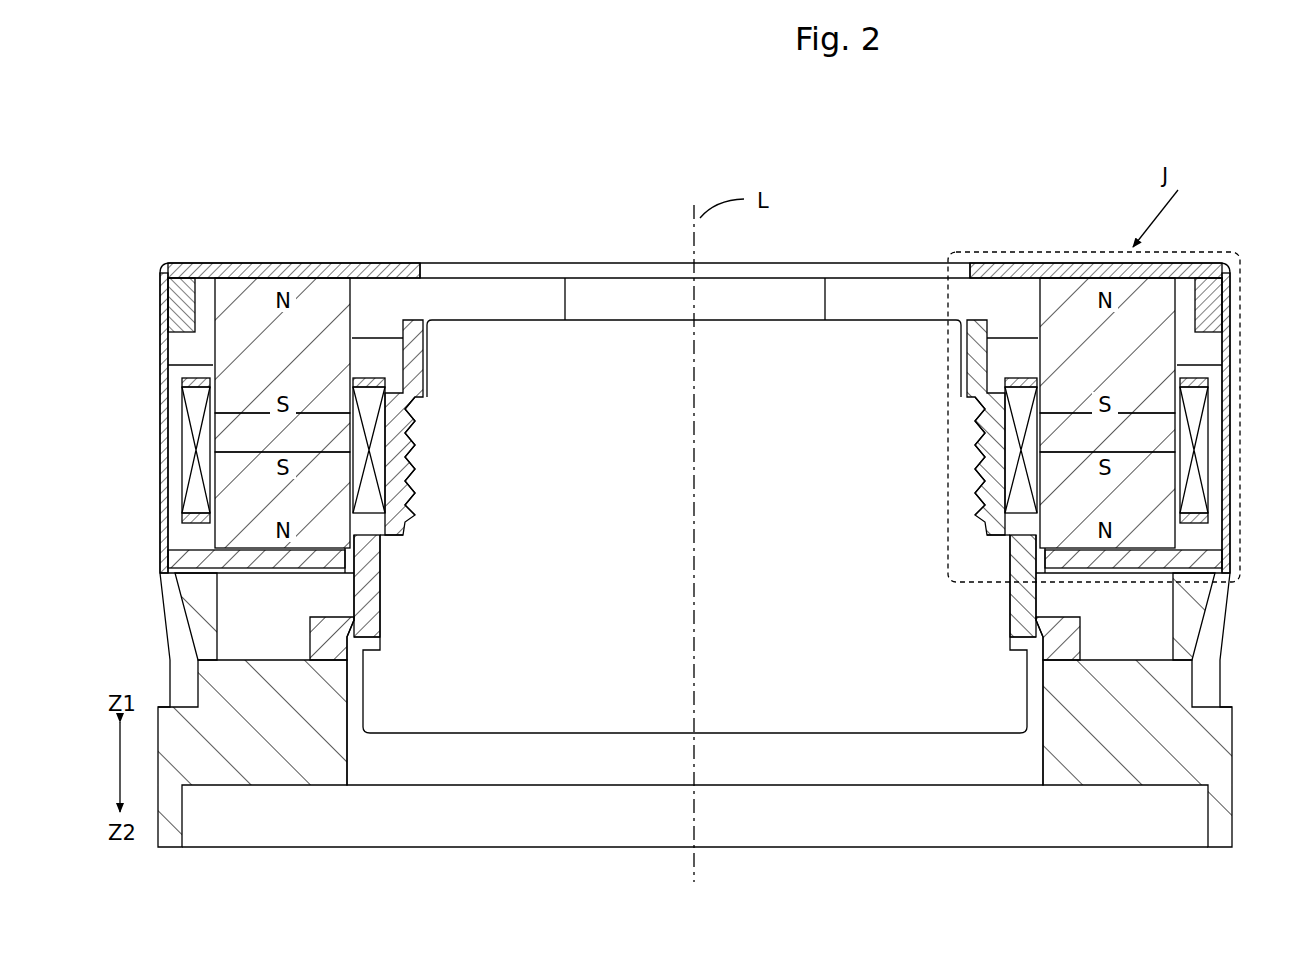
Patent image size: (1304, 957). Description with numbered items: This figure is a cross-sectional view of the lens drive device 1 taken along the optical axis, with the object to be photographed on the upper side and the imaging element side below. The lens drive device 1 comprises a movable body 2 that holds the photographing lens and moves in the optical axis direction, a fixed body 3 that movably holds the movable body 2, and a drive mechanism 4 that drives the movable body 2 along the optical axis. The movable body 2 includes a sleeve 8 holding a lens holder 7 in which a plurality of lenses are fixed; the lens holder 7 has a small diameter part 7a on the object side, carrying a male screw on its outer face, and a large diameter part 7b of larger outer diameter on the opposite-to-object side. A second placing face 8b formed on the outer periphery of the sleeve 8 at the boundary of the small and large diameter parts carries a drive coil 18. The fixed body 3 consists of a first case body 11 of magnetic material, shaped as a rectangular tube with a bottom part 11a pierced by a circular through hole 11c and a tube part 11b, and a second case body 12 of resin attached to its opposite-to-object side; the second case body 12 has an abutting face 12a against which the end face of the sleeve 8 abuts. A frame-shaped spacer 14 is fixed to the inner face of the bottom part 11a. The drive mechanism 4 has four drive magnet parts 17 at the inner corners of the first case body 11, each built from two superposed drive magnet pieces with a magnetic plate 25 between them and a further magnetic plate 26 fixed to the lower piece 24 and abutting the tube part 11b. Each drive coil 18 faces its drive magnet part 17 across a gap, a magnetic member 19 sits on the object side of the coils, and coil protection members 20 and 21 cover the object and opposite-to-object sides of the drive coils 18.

The lens drive device 1 is at (1085, 187).
The movable body 2 is at (410, 320).
The fixed body 3 is at (108, 570).
The drive mechanism 4 is at (190, 351).
The lens holder 7 is at (512, 320).
The small diameter part 7a is at (412, 538).
The large diameter part 7b is at (368, 580).
The sleeve 8 is at (695, 427).
The second placing face 8b is at (404, 488).
The first case body 11 is at (160, 553).
The bottom part 11a is at (300, 266).
The tube part 11b is at (160, 469).
The through hole 11c is at (969, 272).
The second case body 12 is at (163, 636).
The abutting face 12a is at (262, 660).
The spacer 14 is at (170, 295).
The drive magnet part 17 is at (182, 366).
The drive coil 18 is at (182, 433).
The magnetic member 19 is at (372, 384).
The coil protection member 20 is at (182, 384).
The coil protection member 21 is at (182, 516).
The drive magnet piece 24 is at (210, 537).
The magnetic plate 25 is at (402, 424).
The magnetic plate 26 is at (288, 574).